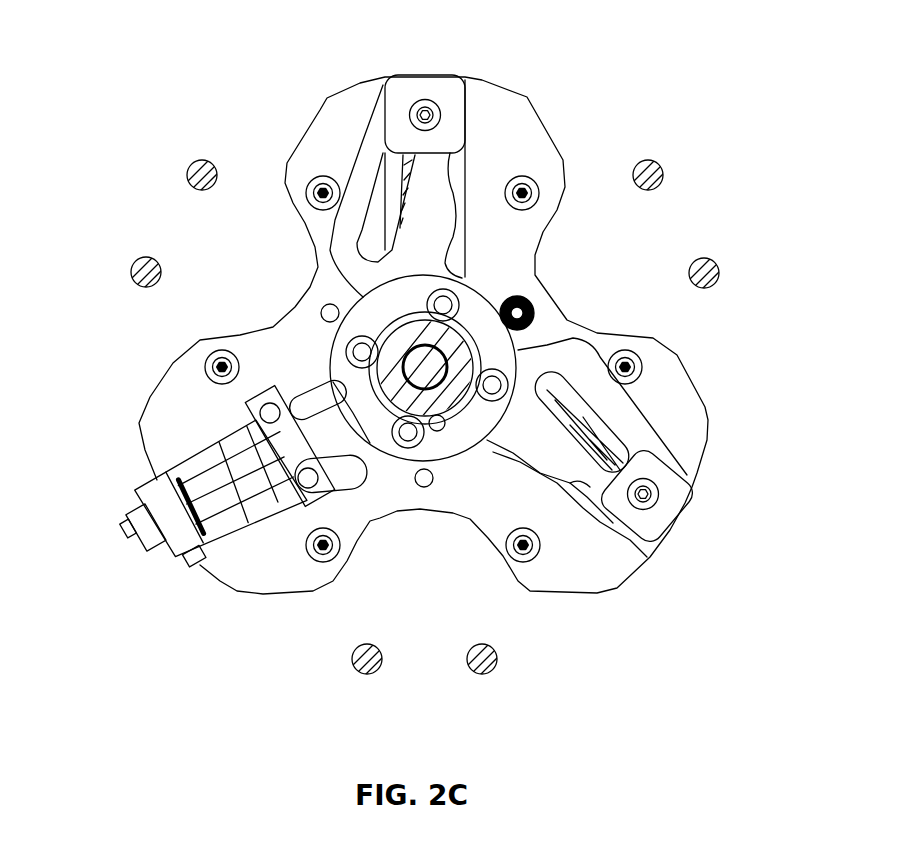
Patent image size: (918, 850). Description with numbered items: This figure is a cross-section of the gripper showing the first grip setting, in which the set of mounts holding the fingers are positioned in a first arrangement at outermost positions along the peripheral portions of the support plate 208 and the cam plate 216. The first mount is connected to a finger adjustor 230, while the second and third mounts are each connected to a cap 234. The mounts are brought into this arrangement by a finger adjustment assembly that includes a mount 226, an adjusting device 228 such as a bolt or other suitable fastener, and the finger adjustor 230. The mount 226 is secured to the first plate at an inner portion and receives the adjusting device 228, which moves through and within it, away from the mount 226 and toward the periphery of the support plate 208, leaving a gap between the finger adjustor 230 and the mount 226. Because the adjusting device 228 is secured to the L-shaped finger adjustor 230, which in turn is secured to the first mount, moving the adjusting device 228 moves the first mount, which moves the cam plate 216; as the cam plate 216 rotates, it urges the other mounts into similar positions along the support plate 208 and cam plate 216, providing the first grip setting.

The support plate 208 is at (288, 340).
The cam plate 216 is at (630, 423).
The mount 226 is at (200, 455).
The adjusting device 228 is at (227, 480).
The finger adjustor 230 is at (160, 500).
The cap 234 is at (415, 97).